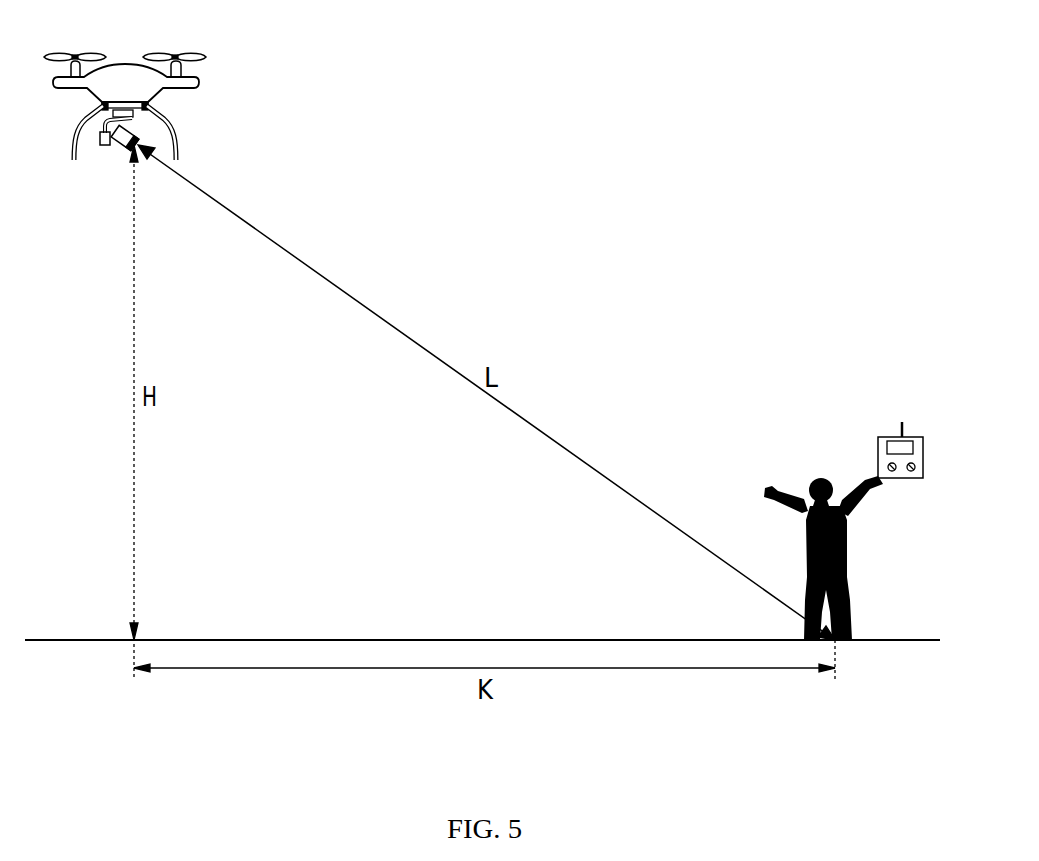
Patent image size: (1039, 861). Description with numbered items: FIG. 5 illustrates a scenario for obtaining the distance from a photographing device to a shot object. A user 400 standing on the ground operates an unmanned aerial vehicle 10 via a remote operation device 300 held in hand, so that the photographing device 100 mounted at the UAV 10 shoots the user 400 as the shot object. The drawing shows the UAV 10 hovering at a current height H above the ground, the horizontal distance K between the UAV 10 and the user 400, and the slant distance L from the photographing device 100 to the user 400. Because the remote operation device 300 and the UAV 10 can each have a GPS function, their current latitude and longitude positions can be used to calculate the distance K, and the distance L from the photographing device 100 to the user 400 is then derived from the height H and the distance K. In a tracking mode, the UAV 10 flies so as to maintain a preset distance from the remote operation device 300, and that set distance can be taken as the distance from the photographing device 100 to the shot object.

The unmanned aerial vehicle 10 is at (126, 64).
The photographing device 100 is at (134, 125).
The remote operation device 300 is at (888, 436).
The user 400 is at (850, 538).